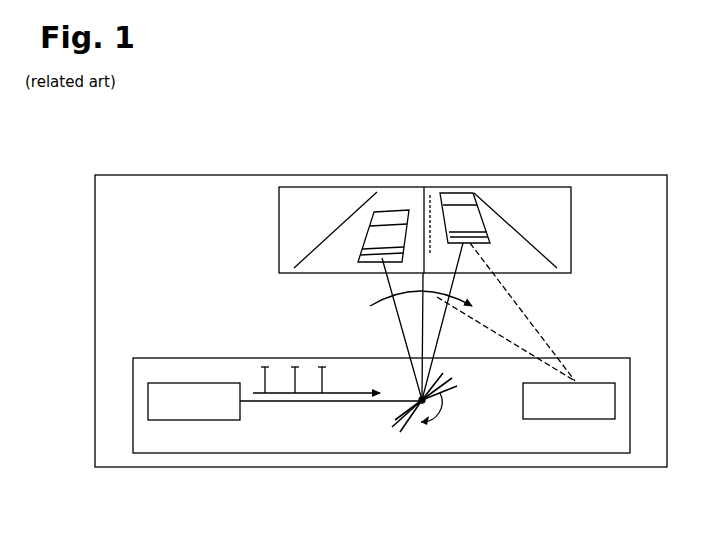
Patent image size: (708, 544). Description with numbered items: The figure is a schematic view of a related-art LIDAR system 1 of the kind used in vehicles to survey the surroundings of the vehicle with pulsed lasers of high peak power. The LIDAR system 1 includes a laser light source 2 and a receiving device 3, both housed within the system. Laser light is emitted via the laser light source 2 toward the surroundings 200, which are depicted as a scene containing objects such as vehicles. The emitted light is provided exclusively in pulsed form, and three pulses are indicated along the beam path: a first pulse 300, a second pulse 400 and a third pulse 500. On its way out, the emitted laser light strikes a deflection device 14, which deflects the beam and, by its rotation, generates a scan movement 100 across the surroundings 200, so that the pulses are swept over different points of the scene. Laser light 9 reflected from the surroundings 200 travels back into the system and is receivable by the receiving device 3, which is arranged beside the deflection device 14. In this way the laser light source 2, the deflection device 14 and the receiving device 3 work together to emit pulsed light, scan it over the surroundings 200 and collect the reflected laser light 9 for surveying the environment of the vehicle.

The LIDAR system 1 is at (133, 440).
The laser light source 2 is at (222, 420).
The receiving device 3 is at (583, 420).
The deflection device 14 is at (422, 434).
The scan movement 100 is at (376, 293).
The surroundings 200 is at (572, 212).
The first pulse 300 is at (320, 375).
The second pulse 400 is at (293, 378).
The third pulse 500 is at (262, 378).
The reflected laser light 9 is at (507, 292).